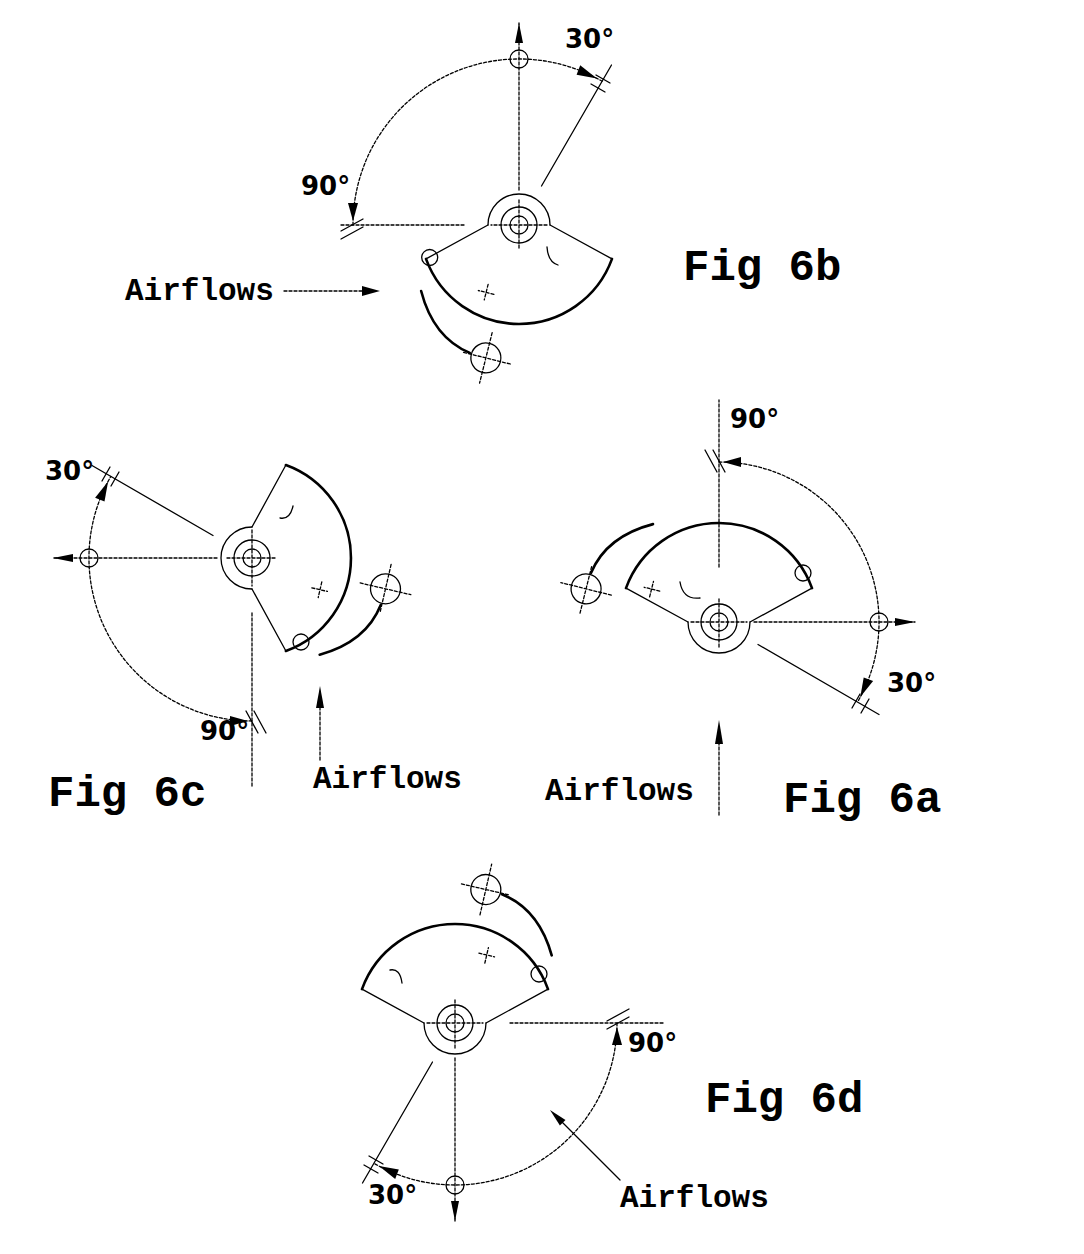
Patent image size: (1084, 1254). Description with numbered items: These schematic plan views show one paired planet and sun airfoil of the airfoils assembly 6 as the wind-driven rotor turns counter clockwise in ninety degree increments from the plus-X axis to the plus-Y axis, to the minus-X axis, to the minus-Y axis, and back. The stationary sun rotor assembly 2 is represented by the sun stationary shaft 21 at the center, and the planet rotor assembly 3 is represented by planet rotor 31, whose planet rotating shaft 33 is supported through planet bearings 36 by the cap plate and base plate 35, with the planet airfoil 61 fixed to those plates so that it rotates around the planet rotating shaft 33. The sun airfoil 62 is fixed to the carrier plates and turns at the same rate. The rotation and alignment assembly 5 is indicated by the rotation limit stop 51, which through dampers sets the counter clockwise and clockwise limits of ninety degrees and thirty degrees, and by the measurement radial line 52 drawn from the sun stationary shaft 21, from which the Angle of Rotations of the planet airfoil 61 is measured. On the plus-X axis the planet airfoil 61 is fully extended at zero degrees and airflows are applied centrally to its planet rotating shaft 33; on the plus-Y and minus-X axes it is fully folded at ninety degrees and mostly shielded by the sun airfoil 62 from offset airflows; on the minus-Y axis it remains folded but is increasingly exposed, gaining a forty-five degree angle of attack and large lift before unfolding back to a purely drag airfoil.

In FIG. 6B, the sun rotor assembly 2 is at (808, 168).
In FIG. 6B, the planet rotor assembly 3 is at (899, 130).
In FIG. 6B, the rotation and alignment assembly 5 is at (899, 164).
In FIG. 6B, the airfoils assembly 6 is at (899, 196).
In FIG. 6B, the sun stationary shaft 21 is at (473, 358).
In FIG. 6C, the sun stationary shaft 21 is at (400, 594).
In FIG. 6A, the sun stationary shaft 21 is at (585, 597).
In FIG. 6D, the sun stationary shaft 21 is at (497, 870).
In FIG. 6D, the planet rotor 31 is at (455, 1023).
In FIG. 6D, the planet rotating shaft 33 is at (245, 1120).
In FIG. 6B, the base plate 35 is at (553, 254).
In FIG. 6C, the base plate 35 is at (283, 510).
In FIG. 6A, the base plate 35 is at (683, 588).
In FIG. 6D, the base plate 35 is at (395, 972).
In FIG. 6D, the planet bearings 36 is at (245, 1155).
In FIG. 6B, the rotation limit stop 51 is at (473, 156).
In FIG. 6C, the rotation limit stop 51 is at (198, 613).
In FIG. 6A, the rotation limit stop 51 is at (768, 572).
In FIG. 6D, the rotation limit stop 51 is at (496, 1077).
In FIG. 6B, the measurement radial line 52 is at (485, 95).
In FIG. 6C, the measurement radial line 52 is at (122, 571).
In FIG. 6A, the measurement radial line 52 is at (852, 598).
In FIG. 6D, the measurement radial line 52 is at (487, 1142).
In FIG. 6B, the planet airfoil 61 is at (423, 261).
In FIG. 6C, the planet airfoil 61 is at (305, 642).
In FIG. 6A, the planet airfoil 61 is at (703, 515).
In FIG. 6D, the planet airfoil 61 is at (547, 973).
In FIG. 6B, the sun airfoil 62 is at (420, 297).
In FIG. 6C, the sun airfoil 62 is at (353, 633).
In FIG. 6A, the sun airfoil 62 is at (638, 513).
In FIG. 6D, the sun airfoil 62 is at (542, 905).